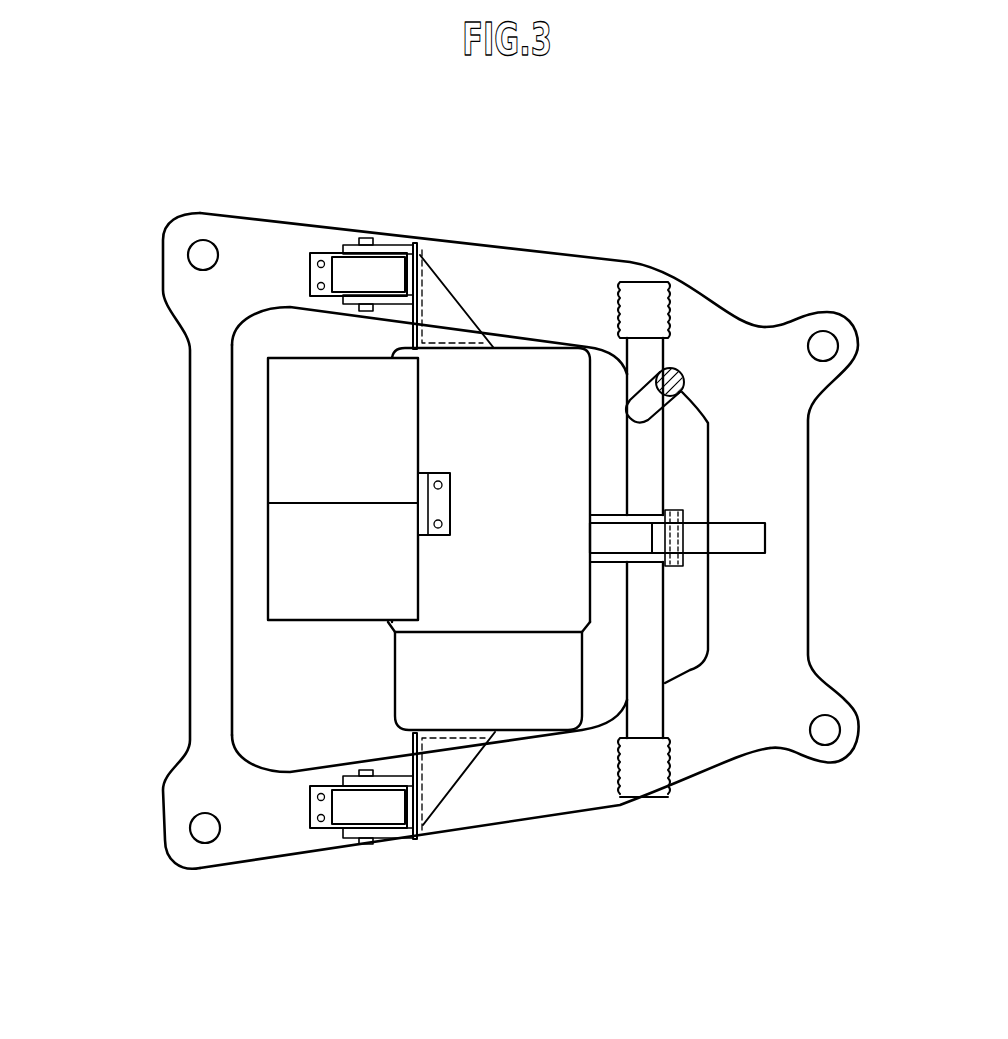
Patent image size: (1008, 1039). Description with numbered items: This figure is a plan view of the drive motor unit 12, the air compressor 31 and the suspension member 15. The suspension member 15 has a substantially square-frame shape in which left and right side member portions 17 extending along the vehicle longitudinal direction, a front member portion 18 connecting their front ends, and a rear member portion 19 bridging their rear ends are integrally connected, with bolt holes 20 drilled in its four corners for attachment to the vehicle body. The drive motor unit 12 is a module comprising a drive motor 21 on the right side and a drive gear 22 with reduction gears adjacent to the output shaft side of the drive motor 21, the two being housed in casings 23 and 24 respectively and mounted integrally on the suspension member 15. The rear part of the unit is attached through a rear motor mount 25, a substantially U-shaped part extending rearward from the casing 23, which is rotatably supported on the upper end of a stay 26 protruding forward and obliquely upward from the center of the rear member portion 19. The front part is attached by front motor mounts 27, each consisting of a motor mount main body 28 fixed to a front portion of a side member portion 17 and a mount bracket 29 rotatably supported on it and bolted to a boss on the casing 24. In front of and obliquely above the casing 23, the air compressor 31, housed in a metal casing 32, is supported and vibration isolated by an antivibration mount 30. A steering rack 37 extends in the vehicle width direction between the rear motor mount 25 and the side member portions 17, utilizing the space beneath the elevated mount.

The drive motor unit 12 is at (598, 640).
The suspension member 15 is at (484, 522).
The side member portions 17 is at (487, 265).
The front member portion 18 is at (203, 563).
The rear member portion 19 is at (773, 603).
The bolt holes 20 is at (823, 347).
The drive motor 21 is at (503, 394).
The drive gear 22 is at (573, 777).
The casing 23 is at (533, 410).
The casing 24 is at (527, 698).
The rear motor mount 25 is at (642, 518).
The stay 26 is at (720, 537).
The front motor mounts 27 is at (386, 244).
The motor mount main body 28 is at (347, 812).
The mount bracket 29 is at (435, 785).
The antivibration mount 30 is at (436, 496).
The air compressor 31 is at (249, 489).
The casing 32 is at (313, 425).
The steering rack 37 is at (647, 360).